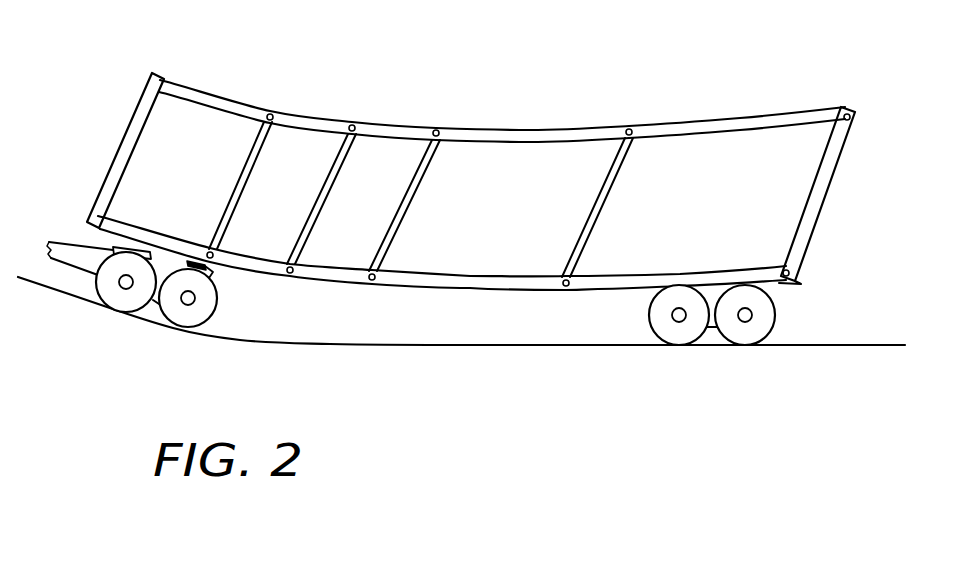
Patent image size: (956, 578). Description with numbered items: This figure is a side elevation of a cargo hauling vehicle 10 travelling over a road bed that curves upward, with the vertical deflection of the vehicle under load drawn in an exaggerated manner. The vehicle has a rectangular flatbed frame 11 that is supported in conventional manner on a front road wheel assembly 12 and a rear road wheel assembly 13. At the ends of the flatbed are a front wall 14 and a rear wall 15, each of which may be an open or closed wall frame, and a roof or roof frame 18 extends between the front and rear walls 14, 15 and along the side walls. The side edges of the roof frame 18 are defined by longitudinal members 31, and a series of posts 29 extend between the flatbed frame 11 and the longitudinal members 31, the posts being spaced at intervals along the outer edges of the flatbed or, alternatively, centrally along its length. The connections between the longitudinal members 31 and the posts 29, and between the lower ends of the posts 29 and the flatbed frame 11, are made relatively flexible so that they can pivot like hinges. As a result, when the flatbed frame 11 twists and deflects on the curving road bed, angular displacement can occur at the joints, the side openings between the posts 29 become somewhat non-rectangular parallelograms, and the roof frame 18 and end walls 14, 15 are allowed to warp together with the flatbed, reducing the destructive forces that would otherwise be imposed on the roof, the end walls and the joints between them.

The cargo hauling vehicle 10 is at (222, 97).
The flatbed frame 11 is at (468, 288).
The road wheel assembly 12 is at (171, 332).
The road wheel assembly 13 is at (750, 350).
The front wall 14 is at (133, 128).
The rear wall 15 is at (821, 202).
The roof frame 18 is at (413, 124).
The post 29 is at (404, 208).
The longitudinal member 31 is at (553, 103).